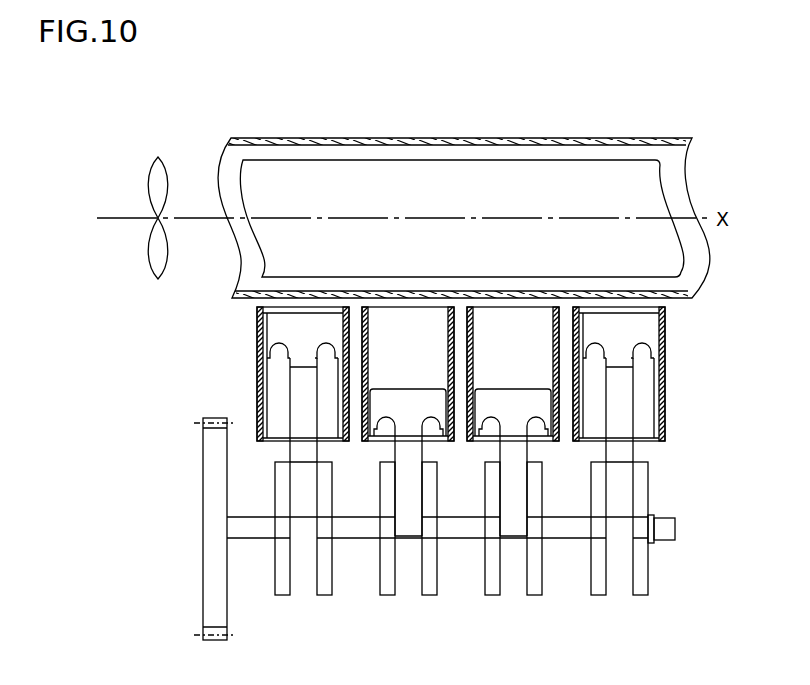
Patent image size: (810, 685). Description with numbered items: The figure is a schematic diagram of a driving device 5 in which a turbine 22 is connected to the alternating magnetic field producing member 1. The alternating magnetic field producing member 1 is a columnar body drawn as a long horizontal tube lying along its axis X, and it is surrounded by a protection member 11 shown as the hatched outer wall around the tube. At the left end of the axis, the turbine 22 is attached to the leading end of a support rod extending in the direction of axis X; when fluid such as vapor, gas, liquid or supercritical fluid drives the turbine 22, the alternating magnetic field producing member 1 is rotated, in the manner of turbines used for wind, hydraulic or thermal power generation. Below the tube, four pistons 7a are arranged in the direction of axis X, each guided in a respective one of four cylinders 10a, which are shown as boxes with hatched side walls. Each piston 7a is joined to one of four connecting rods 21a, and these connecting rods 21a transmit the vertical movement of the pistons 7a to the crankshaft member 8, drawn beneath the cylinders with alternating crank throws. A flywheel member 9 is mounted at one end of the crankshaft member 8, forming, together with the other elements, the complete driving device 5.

The driving device 5 is at (648, 78).
The alternating magnetic field producing member 1 is at (567, 180).
The protection member 11 is at (472, 143).
The turbine 22 is at (157, 172).
The piston 7a is at (280, 328).
The cylinder 10a is at (258, 345).
The connecting rod 21a is at (310, 450).
The crankshaft member 8 is at (663, 530).
The flywheel member 9 is at (215, 490).